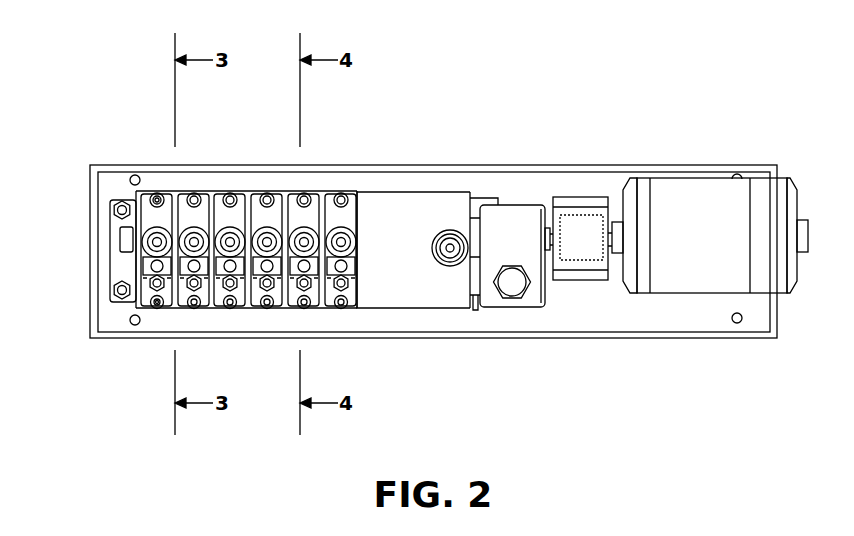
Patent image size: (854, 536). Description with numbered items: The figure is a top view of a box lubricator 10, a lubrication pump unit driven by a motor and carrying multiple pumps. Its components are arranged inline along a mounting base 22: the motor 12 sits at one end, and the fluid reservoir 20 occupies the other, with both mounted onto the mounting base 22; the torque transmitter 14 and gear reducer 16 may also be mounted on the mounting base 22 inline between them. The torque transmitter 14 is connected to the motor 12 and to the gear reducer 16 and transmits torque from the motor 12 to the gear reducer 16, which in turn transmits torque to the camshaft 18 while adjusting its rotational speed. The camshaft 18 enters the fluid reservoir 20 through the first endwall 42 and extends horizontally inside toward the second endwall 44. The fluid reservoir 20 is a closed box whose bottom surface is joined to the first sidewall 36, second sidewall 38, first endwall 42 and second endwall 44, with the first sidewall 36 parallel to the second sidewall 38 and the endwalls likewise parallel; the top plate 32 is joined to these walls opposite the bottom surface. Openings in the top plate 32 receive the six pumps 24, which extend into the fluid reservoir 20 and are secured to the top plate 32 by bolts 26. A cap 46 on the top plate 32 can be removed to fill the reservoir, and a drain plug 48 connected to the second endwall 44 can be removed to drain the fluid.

The box lubricator 10 is at (91, 128).
The motor 12 is at (692, 197).
The torque transmitter 14 is at (581, 197).
The gear reducer 16 is at (528, 308).
The camshaft 18 is at (475, 300).
The fluid reservoir 20 is at (444, 188).
The mounting base 22 is at (692, 317).
The pumps 24 is at (349, 214).
The bolts 26 is at (156, 193).
The top plate 32 is at (458, 207).
The first sidewall 36 is at (250, 309).
The second sidewall 38 is at (250, 191).
The first endwall 42 is at (482, 212).
The second endwall 44 is at (122, 270).
The cap 46 is at (450, 252).
The drain plug 48 is at (125, 237).